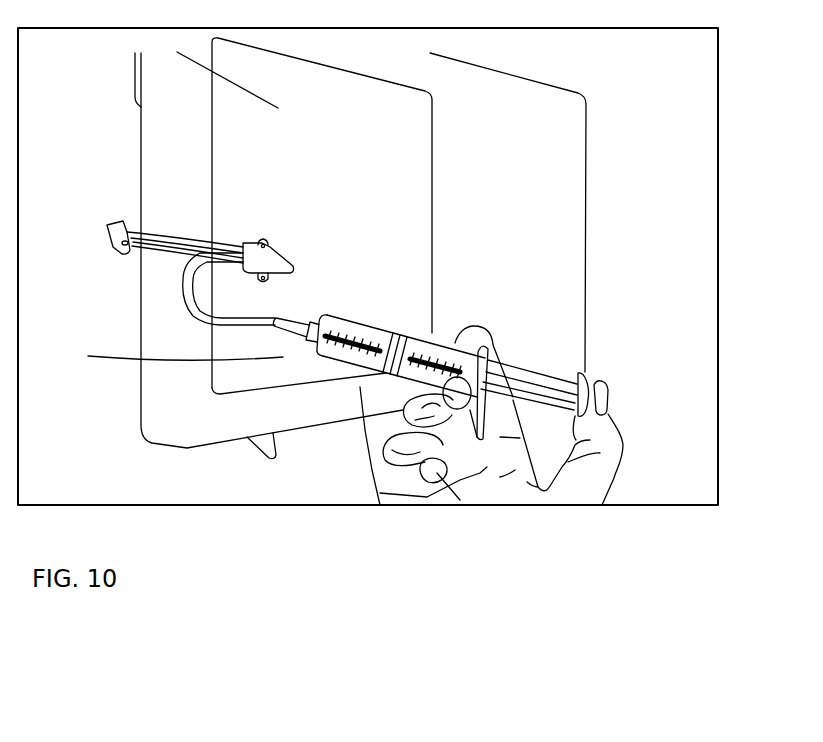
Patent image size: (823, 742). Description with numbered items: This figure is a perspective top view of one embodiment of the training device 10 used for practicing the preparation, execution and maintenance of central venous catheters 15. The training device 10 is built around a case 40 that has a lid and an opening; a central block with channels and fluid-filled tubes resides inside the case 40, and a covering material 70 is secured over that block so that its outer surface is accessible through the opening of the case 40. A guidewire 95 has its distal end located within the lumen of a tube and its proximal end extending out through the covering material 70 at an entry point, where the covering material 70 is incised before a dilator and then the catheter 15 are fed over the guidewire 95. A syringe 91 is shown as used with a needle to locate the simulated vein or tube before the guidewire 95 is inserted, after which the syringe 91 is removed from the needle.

The training device 10 is at (528, 293).
The case 40 is at (503, 237).
The guidewire 95 is at (173, 357).
The catheter 15 is at (262, 262).
The covering material 70 is at (303, 362).
The syringe 91 is at (357, 353).